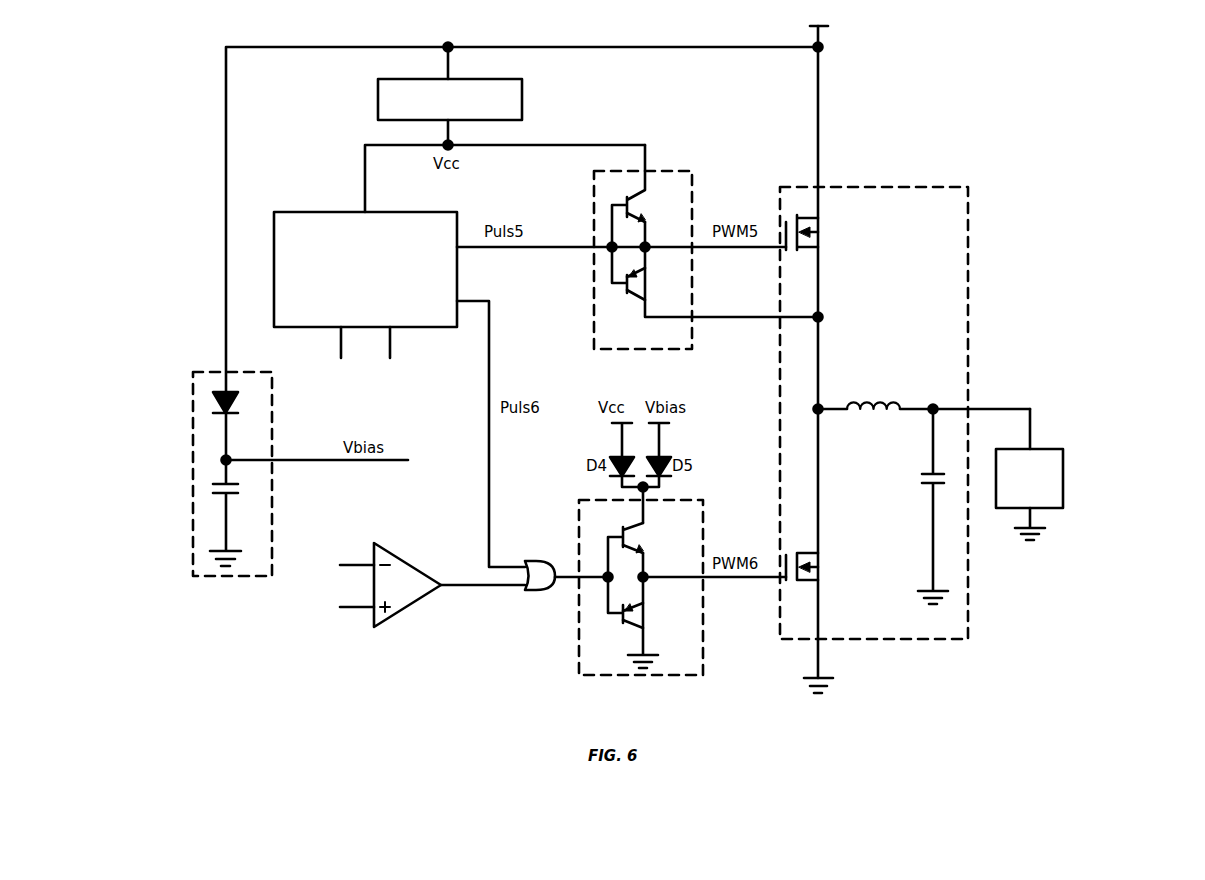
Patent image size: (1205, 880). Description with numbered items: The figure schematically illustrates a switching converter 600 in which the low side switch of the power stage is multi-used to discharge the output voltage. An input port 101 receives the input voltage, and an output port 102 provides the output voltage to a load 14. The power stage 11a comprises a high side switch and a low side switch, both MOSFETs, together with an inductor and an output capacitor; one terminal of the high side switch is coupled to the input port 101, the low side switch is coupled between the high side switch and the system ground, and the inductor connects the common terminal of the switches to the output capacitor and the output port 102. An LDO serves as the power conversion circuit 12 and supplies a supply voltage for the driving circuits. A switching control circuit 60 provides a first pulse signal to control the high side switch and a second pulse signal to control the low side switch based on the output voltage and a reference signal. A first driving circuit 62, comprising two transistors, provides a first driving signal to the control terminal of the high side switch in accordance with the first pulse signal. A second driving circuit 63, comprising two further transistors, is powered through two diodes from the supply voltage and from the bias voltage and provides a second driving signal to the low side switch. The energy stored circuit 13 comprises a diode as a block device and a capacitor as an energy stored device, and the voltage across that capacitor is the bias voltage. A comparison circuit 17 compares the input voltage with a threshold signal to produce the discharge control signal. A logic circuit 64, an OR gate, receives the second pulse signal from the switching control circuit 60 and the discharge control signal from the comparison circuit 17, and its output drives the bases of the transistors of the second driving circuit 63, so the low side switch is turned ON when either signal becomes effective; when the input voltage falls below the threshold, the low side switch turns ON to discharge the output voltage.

The switching converter 600 is at (1128, 90).
The input port 101 is at (813, 14).
The output port 102 is at (1014, 399).
The power conversion circuit 12 is at (522, 104).
The switching control circuit 60 is at (310, 212).
The driving circuit 62 is at (693, 180).
The driving circuit 63 is at (703, 512).
The logic circuit 64 is at (545, 561).
The comparison circuit 17 is at (405, 562).
The energy stored circuit 13 is at (272, 427).
The power stage 11a is at (970, 242).
The load 14 is at (1034, 449).